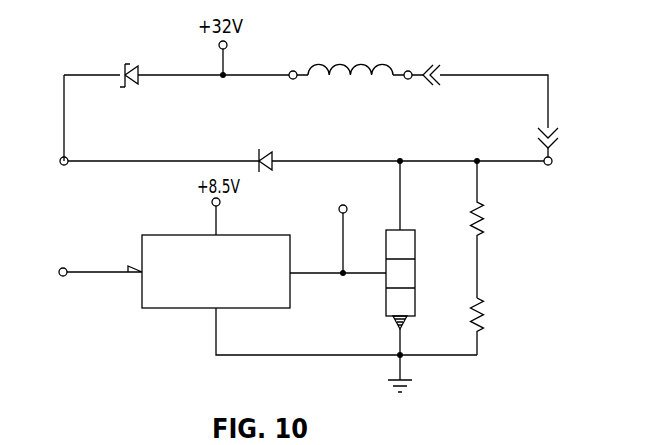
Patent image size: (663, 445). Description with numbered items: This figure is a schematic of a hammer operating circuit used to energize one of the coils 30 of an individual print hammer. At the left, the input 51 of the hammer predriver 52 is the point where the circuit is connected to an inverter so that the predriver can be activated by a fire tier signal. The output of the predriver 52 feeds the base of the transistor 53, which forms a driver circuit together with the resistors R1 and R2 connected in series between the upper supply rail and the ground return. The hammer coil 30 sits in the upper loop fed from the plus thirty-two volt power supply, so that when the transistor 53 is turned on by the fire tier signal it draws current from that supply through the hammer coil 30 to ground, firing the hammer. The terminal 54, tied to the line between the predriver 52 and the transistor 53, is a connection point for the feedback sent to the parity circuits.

The hammer coil 30 is at (358, 64).
The input 51 is at (62, 268).
The hammer predriver 52 is at (257, 235).
The transistor 53 is at (416, 254).
The terminal 54 is at (352, 199).
The resistor R1 is at (486, 229).
The resistor R2 is at (486, 320).